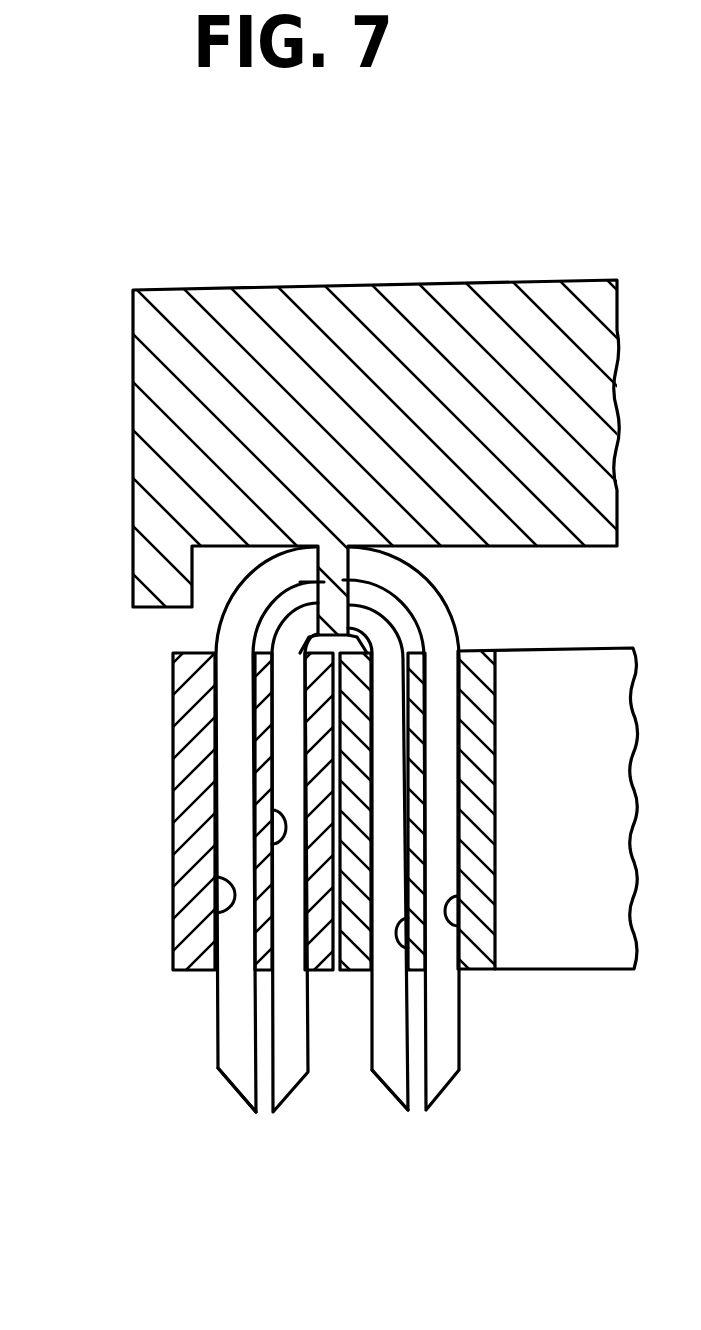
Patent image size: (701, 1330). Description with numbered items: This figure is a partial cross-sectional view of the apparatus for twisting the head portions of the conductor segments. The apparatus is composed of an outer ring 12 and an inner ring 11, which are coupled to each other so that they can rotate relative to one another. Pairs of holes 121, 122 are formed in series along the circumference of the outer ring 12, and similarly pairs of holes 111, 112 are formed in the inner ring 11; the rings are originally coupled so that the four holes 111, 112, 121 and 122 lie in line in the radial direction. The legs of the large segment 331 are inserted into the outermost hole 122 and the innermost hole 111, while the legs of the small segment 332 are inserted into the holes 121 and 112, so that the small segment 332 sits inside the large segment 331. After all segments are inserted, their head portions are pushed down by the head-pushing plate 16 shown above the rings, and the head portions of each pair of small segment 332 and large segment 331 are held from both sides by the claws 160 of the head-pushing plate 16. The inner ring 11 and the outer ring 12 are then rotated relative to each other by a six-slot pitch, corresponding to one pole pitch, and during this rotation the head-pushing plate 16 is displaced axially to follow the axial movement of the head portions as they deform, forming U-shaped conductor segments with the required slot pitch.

The head-pushing plate 16 is at (415, 317).
The claws 160 is at (230, 617).
The outer ring 12 is at (197, 735).
The hole 121 is at (270, 840).
The hole 122 is at (214, 910).
The inner ring 11 is at (473, 750).
The hole 111 is at (462, 926).
The hole 112 is at (420, 953).
The large segment 331 is at (226, 1090).
The small segment 332 is at (384, 1092).